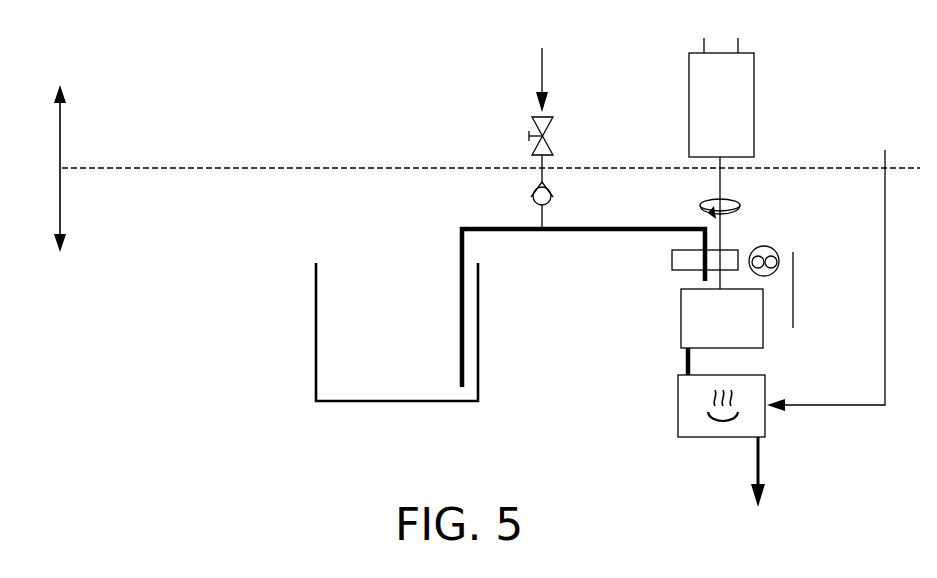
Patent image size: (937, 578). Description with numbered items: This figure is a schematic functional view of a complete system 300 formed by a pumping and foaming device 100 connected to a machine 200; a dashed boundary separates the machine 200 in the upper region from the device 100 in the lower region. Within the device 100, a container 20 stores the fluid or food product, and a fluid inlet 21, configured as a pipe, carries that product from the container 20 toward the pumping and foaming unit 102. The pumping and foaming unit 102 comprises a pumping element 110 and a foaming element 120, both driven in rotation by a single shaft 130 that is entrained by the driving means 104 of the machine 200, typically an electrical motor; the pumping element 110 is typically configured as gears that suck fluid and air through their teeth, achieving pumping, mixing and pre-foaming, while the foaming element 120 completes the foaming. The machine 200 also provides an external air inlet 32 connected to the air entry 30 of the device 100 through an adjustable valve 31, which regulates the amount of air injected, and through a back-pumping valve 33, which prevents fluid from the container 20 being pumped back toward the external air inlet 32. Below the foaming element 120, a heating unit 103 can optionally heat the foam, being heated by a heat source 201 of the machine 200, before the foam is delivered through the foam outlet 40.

The container 20 is at (385, 381).
The fluid inlet 21 is at (606, 228).
The air entry 30 is at (540, 213).
The adjustable valve 31 is at (531, 141).
The external air inlet 32 is at (556, 45).
The back-pumping valve 33 is at (532, 190).
The foam outlet 40 is at (802, 510).
The foaming device 100 is at (114, 207).
The pumping and foaming unit 102 is at (793, 293).
The heating unit 103 is at (678, 404).
The driving means 104 is at (741, 119).
The pumping element 110 is at (672, 259).
The foaming element 120 is at (681, 317).
The shaft 130 is at (722, 186).
The machine 200 is at (114, 160).
The heat source 201 is at (906, 141).
The system 300 is at (54, 180).